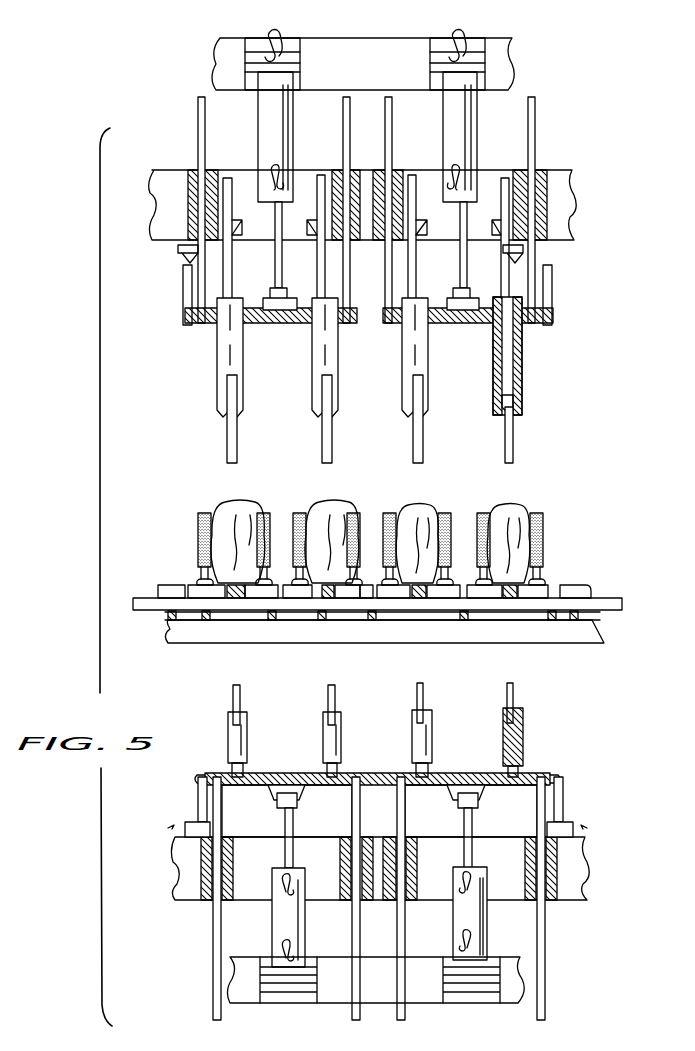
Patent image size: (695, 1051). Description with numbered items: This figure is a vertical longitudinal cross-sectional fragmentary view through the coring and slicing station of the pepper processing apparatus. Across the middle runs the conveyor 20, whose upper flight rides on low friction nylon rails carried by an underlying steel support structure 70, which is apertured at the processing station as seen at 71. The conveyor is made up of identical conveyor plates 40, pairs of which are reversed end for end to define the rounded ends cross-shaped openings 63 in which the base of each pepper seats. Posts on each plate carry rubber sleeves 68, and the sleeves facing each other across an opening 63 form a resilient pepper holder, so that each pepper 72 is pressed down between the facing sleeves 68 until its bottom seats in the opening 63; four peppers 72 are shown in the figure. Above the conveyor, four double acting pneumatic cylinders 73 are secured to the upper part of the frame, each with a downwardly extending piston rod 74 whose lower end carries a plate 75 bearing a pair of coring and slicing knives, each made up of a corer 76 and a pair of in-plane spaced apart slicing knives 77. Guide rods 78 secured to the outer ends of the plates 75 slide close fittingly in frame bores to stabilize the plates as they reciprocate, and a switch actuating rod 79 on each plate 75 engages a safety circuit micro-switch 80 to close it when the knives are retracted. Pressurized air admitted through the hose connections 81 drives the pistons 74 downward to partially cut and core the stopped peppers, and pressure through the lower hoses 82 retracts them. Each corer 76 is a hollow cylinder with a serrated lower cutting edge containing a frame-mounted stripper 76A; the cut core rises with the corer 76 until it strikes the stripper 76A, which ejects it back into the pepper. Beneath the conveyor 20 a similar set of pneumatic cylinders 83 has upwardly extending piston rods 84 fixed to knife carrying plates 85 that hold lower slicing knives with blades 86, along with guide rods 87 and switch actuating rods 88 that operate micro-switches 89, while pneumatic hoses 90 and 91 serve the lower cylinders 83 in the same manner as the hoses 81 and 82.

The conveyor 20 is at (665, 588).
The conveyor plate 40 is at (200, 587).
The rounded ends cross-shaped opening 63 is at (237, 592).
The rubber sleeve 68 is at (197, 533).
The steel support structure 70 is at (579, 615).
The aperture in support structure 71 is at (511, 616).
The pepper 72 is at (228, 503).
The double acting pneumatic cylinder 73 is at (264, 140).
The piston rod 74 is at (276, 264).
The plate 75 is at (298, 322).
The corer 76 is at (313, 393).
The stripper 76A is at (523, 388).
The slicing knife 77 is at (317, 447).
The guide rod 78 is at (197, 144).
The switch actuating rod 79 is at (183, 298).
The safety circuit micro-switch 80 is at (175, 253).
The pneumatic hose connection 81 is at (269, 36).
The lower hose 82 is at (280, 172).
The pneumatic cylinder 83 is at (294, 923).
The piston rod 84 is at (291, 831).
The knife carrying plate 85 is at (304, 777).
The blade 86 is at (330, 696).
The guide rod 87 is at (212, 931).
The switch actuating rod 88 is at (200, 805).
The micro-switch 89 is at (195, 827).
The pneumatic hose 90 is at (277, 952).
The pneumatic hose 91 is at (283, 884).